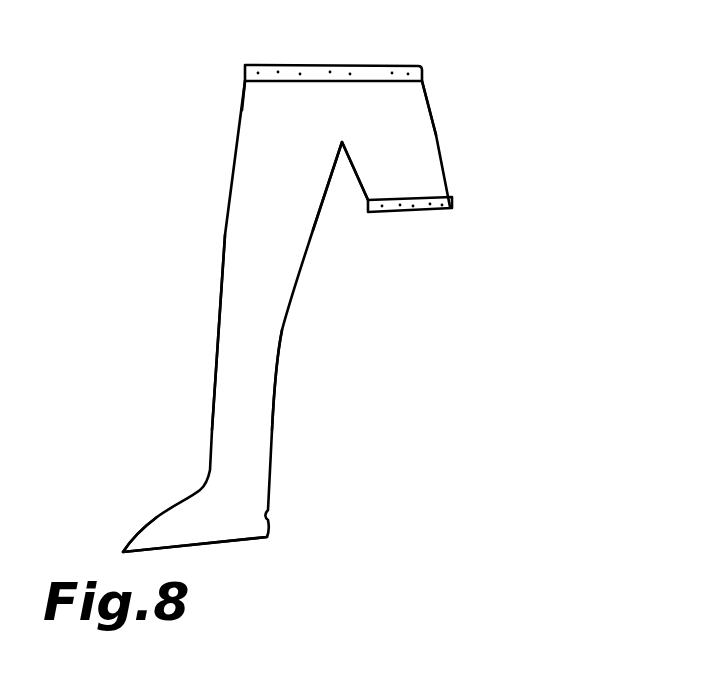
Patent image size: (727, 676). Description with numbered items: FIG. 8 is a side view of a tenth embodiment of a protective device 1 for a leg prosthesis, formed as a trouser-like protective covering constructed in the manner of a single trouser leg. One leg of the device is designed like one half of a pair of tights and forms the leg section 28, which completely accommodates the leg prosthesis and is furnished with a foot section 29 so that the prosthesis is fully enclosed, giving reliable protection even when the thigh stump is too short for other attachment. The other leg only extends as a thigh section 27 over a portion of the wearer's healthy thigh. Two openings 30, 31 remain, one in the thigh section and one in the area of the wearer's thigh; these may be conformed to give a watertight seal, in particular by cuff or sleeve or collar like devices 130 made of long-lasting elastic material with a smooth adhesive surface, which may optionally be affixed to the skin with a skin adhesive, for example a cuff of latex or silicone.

The protective device 1 is at (172, 67).
The thigh section 27 is at (434, 153).
The leg section 28 is at (237, 226).
The foot section 29 is at (153, 518).
The opening 30 is at (450, 208).
The opening 31 is at (400, 64).
The cuff or sleeve or collar like devices 130 is at (372, 76).